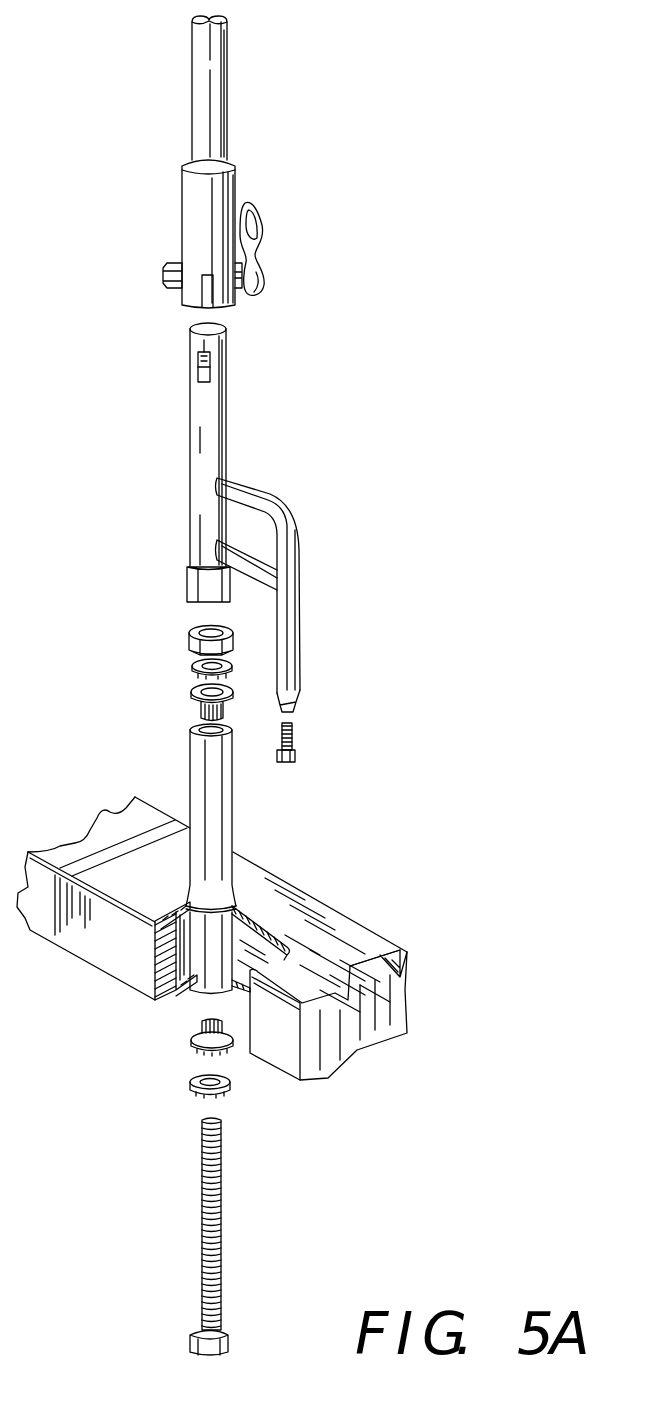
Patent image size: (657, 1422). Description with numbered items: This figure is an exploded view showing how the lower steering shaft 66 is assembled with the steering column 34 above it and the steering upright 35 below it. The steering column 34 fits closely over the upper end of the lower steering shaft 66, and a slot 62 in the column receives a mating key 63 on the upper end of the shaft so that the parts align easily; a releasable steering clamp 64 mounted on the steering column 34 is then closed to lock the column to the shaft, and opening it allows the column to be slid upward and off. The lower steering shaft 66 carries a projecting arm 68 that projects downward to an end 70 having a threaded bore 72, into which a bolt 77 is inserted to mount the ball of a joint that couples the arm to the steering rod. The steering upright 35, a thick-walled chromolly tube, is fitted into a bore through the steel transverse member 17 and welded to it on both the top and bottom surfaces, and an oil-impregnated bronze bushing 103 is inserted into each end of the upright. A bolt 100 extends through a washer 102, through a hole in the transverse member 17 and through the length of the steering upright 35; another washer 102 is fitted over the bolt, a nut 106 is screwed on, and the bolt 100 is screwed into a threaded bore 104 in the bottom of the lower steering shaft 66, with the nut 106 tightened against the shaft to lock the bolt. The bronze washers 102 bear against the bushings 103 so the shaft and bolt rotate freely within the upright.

The steering column 34 is at (230, 85).
The slot 62 is at (208, 275).
The releasable steering clamp 64 is at (262, 222).
The mating key 63 is at (198, 363).
The lower steering shaft 66 is at (202, 512).
The projecting arm 68 is at (280, 517).
The projecting arm end 70 is at (293, 703).
The threaded bore 72 is at (293, 711).
The bolt 77 is at (297, 758).
The threaded bore 104 is at (187, 585).
The nut 106 is at (193, 628).
The washer 102 is at (192, 663).
The oil-impregnated bronze bushing 103 is at (190, 693).
The steering upright 35 is at (202, 762).
The transverse member 17 is at (287, 910).
The bolt 100 is at (223, 1198).